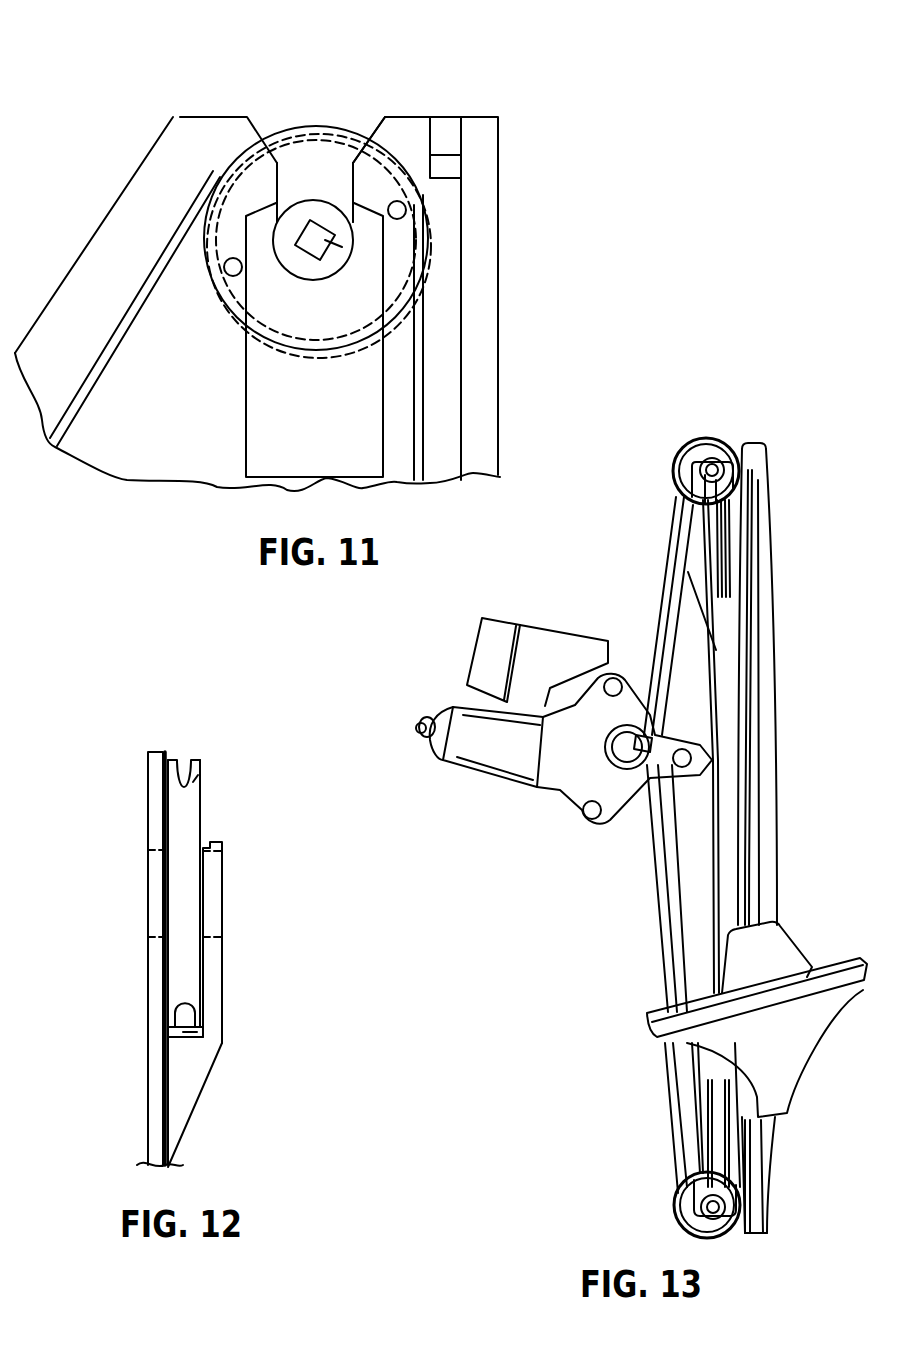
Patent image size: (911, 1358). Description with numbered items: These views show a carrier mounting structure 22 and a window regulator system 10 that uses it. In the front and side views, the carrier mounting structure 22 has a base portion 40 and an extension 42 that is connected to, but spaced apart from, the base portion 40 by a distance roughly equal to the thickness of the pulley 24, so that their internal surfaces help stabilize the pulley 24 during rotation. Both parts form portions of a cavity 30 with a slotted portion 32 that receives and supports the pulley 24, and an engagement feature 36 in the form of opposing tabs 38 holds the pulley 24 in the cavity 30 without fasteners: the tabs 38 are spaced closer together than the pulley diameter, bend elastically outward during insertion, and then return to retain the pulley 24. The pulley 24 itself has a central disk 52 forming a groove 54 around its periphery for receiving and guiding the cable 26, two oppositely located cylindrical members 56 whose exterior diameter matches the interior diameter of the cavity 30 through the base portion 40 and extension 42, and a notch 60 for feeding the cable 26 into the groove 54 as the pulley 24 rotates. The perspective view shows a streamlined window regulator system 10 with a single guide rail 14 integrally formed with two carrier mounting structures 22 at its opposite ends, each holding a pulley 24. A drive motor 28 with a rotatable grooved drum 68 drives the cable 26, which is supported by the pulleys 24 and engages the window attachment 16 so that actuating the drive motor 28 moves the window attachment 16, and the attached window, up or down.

In FIG. 13, the window regulator system 10 is at (761, 414).
In FIG. 13, the guide rail 14 is at (772, 690).
In FIG. 13, the window attachment 16 is at (830, 985).
In FIG. 11, the carrier mounting structure 22 is at (480, 265).
In FIG. 12, the carrier mounting structure 22 is at (157, 800).
In FIG. 13, the carrier mounting structure 22 is at (662, 474).
In FIG. 11, the pulley 24 is at (362, 160).
In FIG. 12, the pulley 24 is at (183, 817).
In FIG. 13, the pulley 24 is at (705, 441).
In FIG. 11, the cable 26 is at (137, 312).
In FIG. 13, the cable 26 is at (673, 563).
In FIG. 13, the drive motor 28 is at (485, 748).
In FIG. 11, the cavity 30 is at (328, 114).
In FIG. 12, the cavity 30 is at (203, 1032).
In FIG. 11, the slotted portion 32 is at (288, 178).
In FIG. 11, the engagement feature 36 is at (257, 213).
In FIG. 11, the tabs 38 is at (294, 210).
In FIG. 12, the base portion 40 is at (157, 990).
In FIG. 12, the extension 42 is at (210, 953).
In FIG. 12, the central disk 52 is at (193, 782).
In FIG. 12, the groove 54 is at (185, 788).
In FIG. 11, the cylindrical members 56 is at (345, 247).
In FIG. 12, the cylindrical members 56 is at (155, 893).
In FIG. 11, the notch 60 is at (415, 208).
In FIG. 13, the grooved drum 68 is at (640, 762).